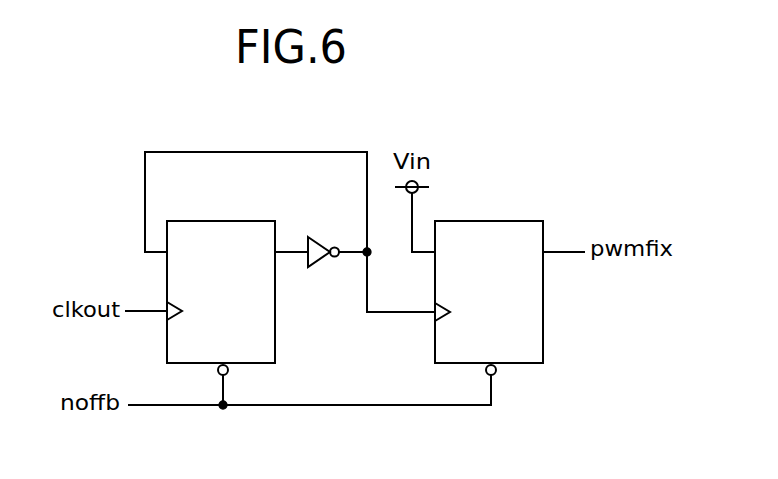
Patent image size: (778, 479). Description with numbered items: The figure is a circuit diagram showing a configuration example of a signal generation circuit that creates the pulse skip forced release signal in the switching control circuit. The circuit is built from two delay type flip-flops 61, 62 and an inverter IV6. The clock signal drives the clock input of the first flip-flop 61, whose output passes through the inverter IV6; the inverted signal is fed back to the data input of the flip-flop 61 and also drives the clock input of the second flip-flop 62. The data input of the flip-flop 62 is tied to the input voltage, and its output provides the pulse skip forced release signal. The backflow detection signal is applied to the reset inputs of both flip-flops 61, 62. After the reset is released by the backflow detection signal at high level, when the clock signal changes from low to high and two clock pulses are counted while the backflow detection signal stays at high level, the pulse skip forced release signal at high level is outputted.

The delay type flip-flop 61 is at (208, 221).
The delay type flip-flop 62 is at (479, 221).
The inverter IV6 is at (323, 260).